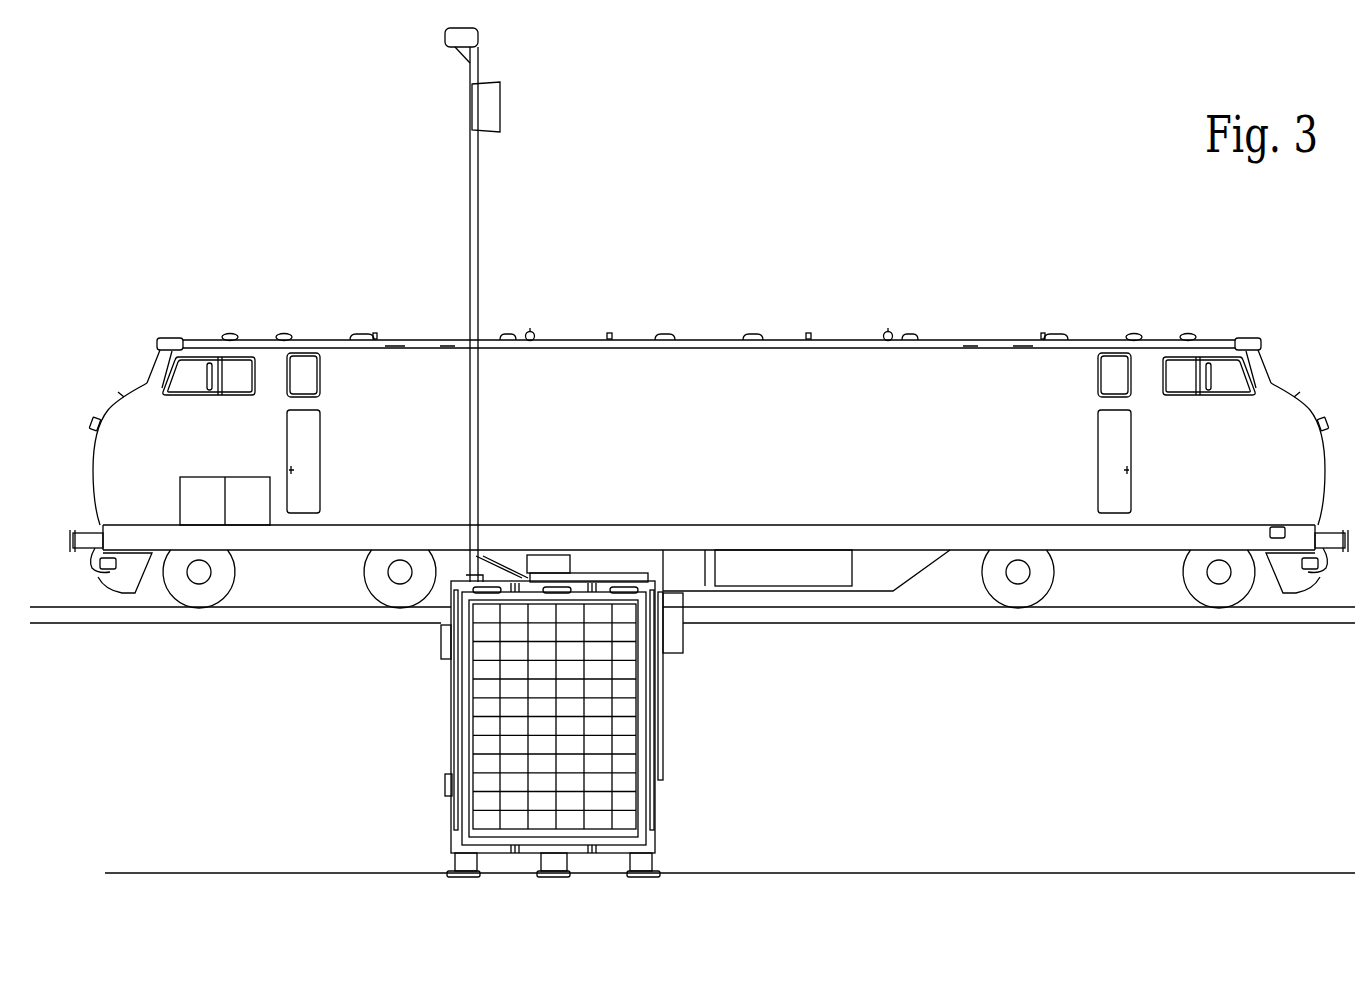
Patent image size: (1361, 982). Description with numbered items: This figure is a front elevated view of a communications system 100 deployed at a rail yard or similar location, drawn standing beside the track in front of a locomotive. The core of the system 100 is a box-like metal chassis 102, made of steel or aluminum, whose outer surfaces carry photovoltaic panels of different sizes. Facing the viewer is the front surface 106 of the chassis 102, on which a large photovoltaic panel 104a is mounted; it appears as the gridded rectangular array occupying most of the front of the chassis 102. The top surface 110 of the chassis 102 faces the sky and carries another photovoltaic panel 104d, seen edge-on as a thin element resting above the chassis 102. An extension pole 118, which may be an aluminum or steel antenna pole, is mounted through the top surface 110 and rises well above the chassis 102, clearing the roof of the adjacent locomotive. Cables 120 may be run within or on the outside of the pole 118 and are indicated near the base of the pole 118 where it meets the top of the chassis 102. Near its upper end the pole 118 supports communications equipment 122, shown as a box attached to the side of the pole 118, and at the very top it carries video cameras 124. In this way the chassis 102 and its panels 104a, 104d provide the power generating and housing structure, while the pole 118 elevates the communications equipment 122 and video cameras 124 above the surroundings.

The communications system 100 is at (560, 679).
The chassis 102 is at (655, 811).
The photovoltaic panel 104a is at (490, 727).
The photovoltaic panel 104d is at (553, 581).
The front surface 106 is at (498, 590).
The top surface 110 is at (613, 577).
The extension pole 118 is at (481, 277).
The cables 120 is at (491, 580).
The communications equipment 122 is at (501, 99).
The video cameras 124 is at (479, 33).